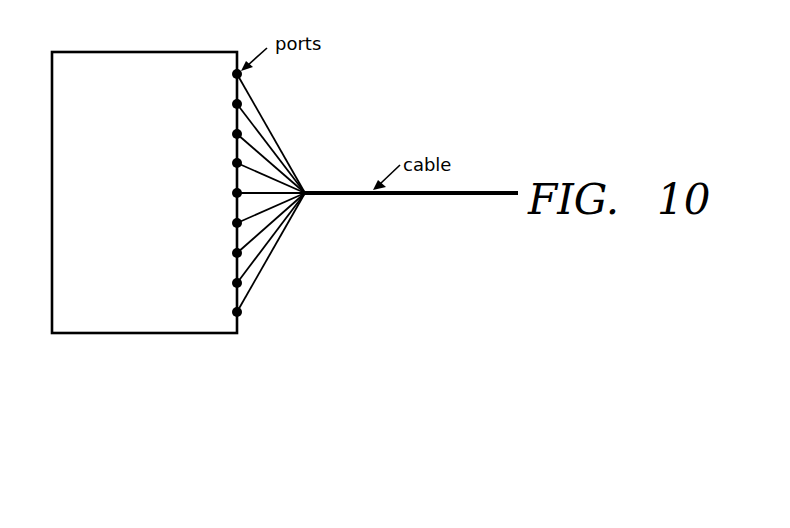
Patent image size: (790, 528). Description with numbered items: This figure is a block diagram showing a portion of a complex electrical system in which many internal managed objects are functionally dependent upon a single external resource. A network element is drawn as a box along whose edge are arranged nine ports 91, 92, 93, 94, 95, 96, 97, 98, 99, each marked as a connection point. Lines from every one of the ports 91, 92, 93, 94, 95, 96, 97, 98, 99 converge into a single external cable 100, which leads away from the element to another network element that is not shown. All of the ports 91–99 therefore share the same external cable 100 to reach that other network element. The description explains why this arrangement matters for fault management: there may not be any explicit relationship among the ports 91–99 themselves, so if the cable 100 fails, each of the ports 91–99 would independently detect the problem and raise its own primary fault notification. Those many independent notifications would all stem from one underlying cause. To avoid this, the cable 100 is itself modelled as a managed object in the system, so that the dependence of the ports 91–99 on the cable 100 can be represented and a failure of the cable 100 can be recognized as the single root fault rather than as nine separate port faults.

The port 91 is at (232, 74).
The port 92 is at (232, 104).
The port 93 is at (232, 134).
The port 94 is at (232, 163).
The port 95 is at (232, 193).
The port 96 is at (232, 223).
The port 97 is at (232, 253).
The port 98 is at (232, 283).
The port 99 is at (232, 312).
The external cable 100 is at (430, 196).